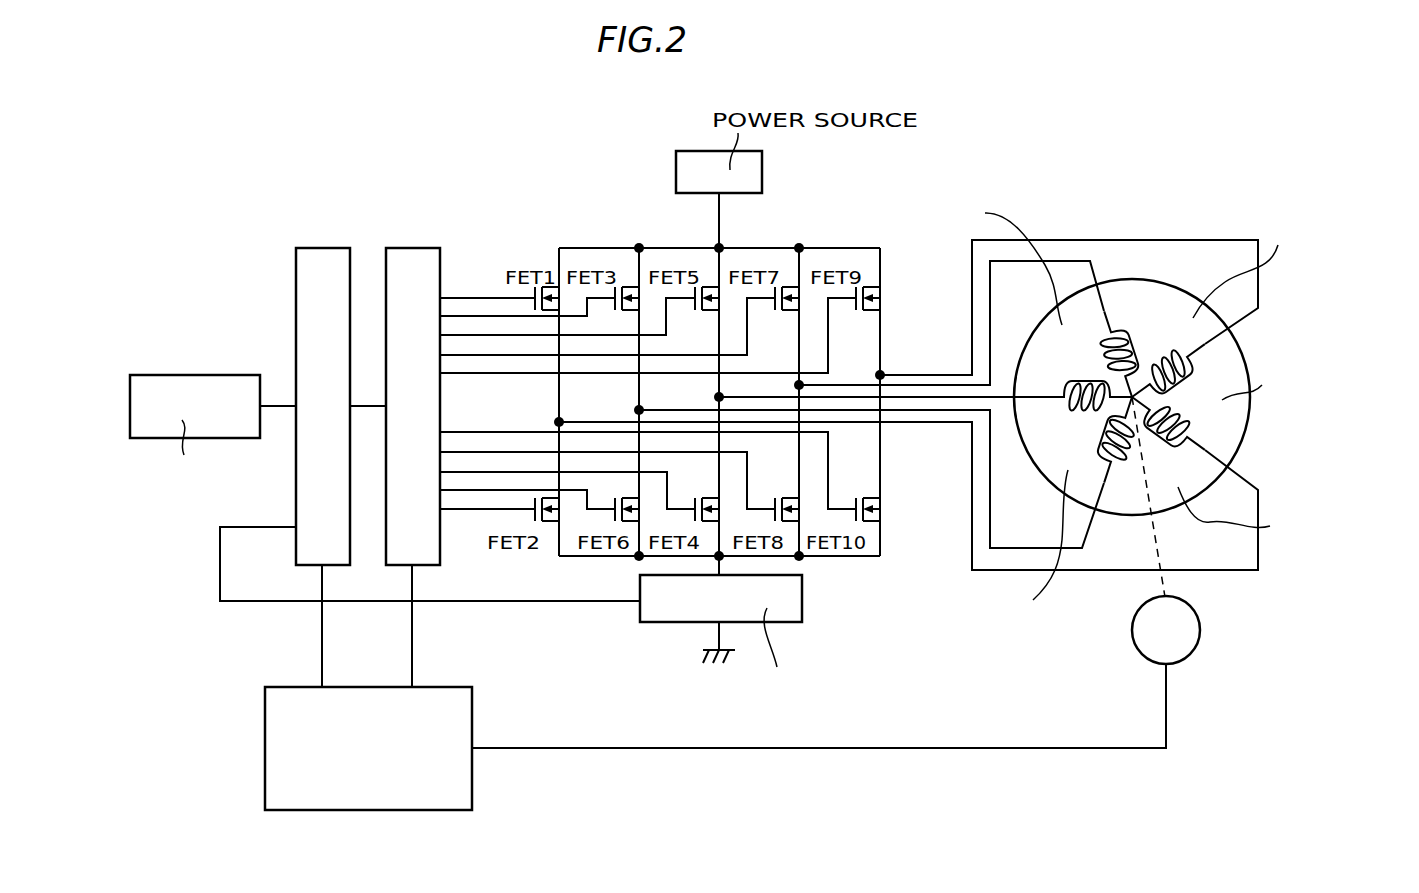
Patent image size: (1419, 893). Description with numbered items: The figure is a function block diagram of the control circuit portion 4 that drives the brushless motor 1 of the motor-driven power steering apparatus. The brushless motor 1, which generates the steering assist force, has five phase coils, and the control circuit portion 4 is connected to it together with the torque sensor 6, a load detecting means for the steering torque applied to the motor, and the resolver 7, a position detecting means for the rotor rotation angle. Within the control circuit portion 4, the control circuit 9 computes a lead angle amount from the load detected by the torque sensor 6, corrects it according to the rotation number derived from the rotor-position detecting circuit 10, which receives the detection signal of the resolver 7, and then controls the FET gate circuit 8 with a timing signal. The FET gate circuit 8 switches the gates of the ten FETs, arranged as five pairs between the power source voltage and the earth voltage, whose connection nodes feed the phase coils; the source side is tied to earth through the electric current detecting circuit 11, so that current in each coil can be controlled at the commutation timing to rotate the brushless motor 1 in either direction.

The brushless motor 1 is at (1150, 281).
The control circuit portion 4 is at (278, 148).
The torque sensor 6 is at (157, 383).
The resolver 7 is at (1198, 607).
The FET gate circuit 8 is at (406, 252).
The control circuit 9 is at (319, 252).
The rotor-position detecting circuit 10 is at (266, 710).
The electric current detecting circuit 11 is at (640, 607).